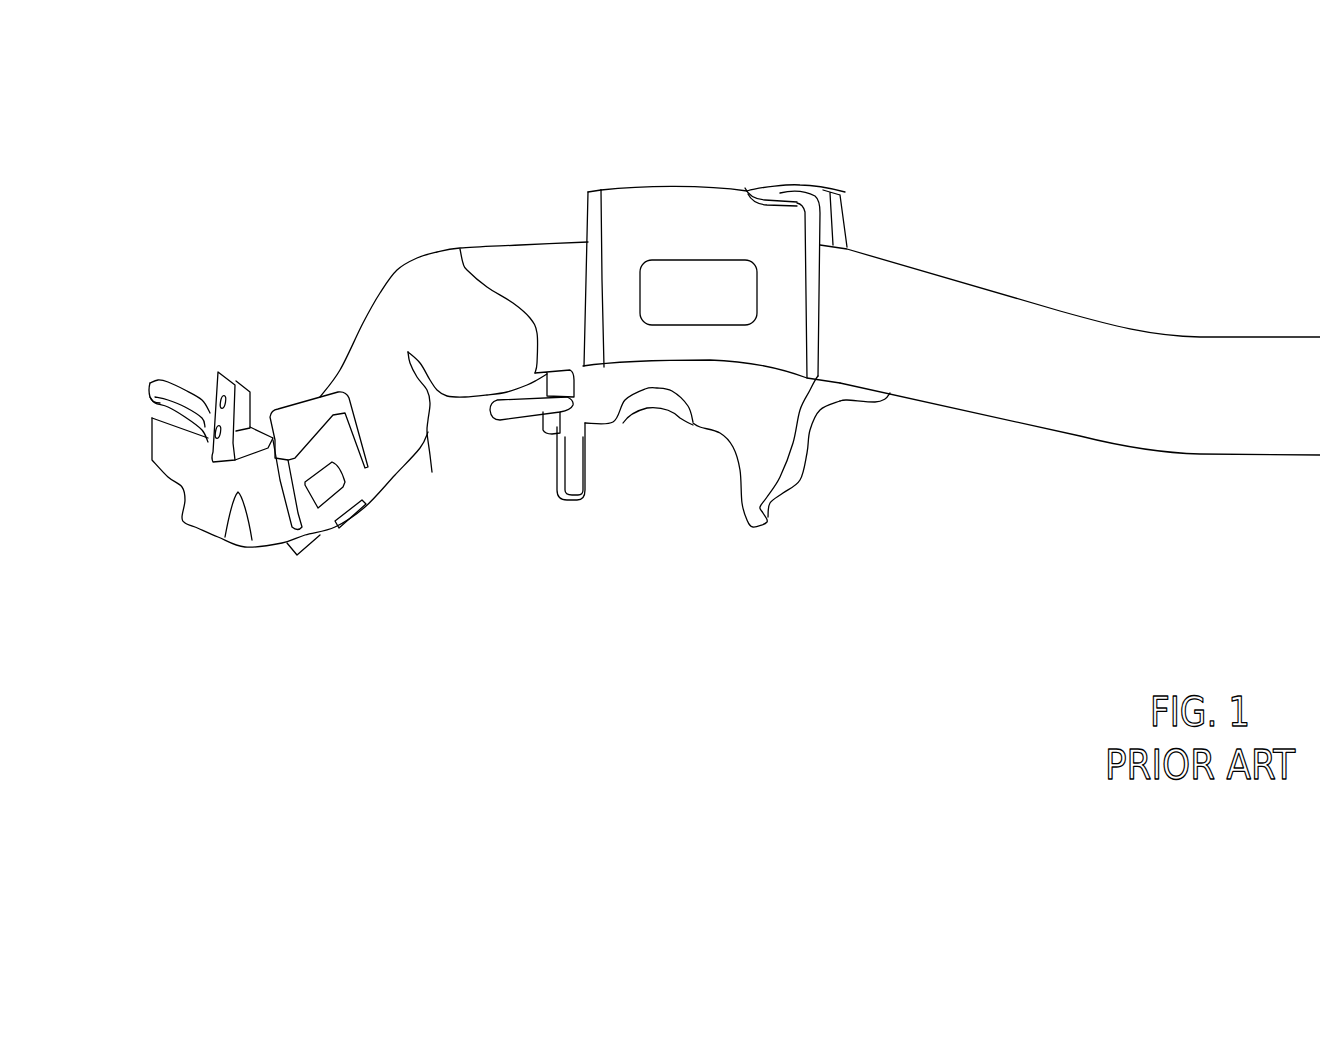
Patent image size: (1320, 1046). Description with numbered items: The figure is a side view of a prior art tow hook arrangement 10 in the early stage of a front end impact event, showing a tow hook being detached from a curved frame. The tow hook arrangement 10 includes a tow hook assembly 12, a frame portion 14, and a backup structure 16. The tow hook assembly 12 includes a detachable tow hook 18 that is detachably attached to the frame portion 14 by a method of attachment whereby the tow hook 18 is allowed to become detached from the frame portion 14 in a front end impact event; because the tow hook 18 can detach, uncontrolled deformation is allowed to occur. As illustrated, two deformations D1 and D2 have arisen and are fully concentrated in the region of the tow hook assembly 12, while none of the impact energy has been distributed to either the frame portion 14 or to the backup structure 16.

The tow hook arrangement 10 is at (1076, 162).
The tow hook assembly 12 is at (262, 330).
The frame portion 14 is at (343, 157).
The backup structure 16 is at (925, 467).
The detachable tow hook 18 is at (160, 393).
The deformation D1 is at (236, 538).
The deformation D2 is at (434, 396).